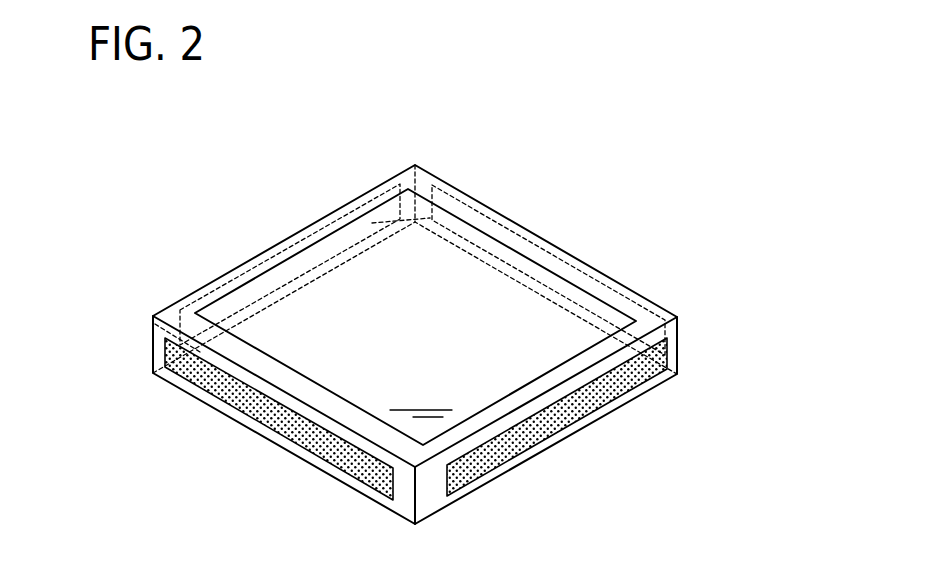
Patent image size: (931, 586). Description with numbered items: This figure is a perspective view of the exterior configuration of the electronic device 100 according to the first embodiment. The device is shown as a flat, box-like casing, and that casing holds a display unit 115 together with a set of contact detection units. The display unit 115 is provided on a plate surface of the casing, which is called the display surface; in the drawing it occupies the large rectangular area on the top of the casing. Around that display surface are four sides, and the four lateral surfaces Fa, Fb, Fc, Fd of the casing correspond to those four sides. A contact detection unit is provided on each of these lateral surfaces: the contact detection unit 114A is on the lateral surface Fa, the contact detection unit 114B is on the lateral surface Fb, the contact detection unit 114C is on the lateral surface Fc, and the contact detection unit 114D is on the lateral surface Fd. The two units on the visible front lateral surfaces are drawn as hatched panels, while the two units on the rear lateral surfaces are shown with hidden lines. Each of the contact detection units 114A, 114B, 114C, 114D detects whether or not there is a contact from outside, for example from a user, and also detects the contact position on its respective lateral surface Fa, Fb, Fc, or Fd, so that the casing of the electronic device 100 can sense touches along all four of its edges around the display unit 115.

The electronic device 100 is at (693, 144).
The contact detection unit 114A is at (523, 240).
The contact detection unit 114B is at (462, 469).
The contact detection unit 114C is at (261, 403).
The contact detection unit 114D is at (279, 254).
The display unit 115 is at (520, 363).
The lateral surface Fa is at (430, 190).
The lateral surface Fb is at (678, 342).
The lateral surface Fc is at (407, 503).
The lateral surface Fd is at (153, 318).